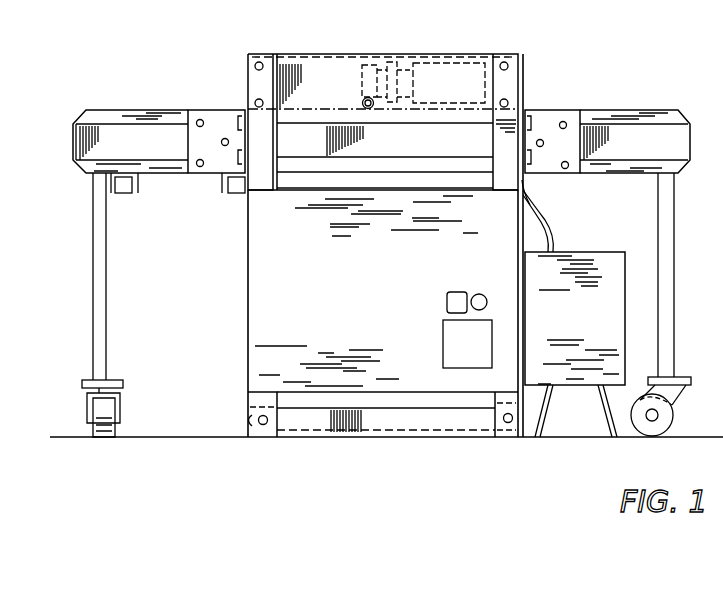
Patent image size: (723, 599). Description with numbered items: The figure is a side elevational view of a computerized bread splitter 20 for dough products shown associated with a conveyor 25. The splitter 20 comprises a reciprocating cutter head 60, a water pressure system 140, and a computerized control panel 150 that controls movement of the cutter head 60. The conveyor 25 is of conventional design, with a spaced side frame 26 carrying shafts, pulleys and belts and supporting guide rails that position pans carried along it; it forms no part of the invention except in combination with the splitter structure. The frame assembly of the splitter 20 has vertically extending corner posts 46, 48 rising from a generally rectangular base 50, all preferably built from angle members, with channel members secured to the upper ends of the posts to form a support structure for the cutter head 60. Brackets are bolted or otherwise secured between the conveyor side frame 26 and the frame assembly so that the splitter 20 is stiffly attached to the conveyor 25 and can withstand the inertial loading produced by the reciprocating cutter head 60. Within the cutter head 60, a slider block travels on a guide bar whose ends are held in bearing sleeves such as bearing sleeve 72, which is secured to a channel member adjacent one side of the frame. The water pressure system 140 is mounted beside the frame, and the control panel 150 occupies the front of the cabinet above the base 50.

The computerized bread splitter 20 is at (329, 54).
The conveyor 25 is at (146, 73).
The side frame 26 is at (652, 95).
The corner post 46 is at (268, 400).
The corner post 48 is at (490, 434).
The base 50 is at (395, 422).
The cutter head 60 is at (366, 63).
The bearing sleeve 72 is at (363, 99).
The water pressure system 140 is at (630, 323).
The computerized control panel 150 is at (272, 282).